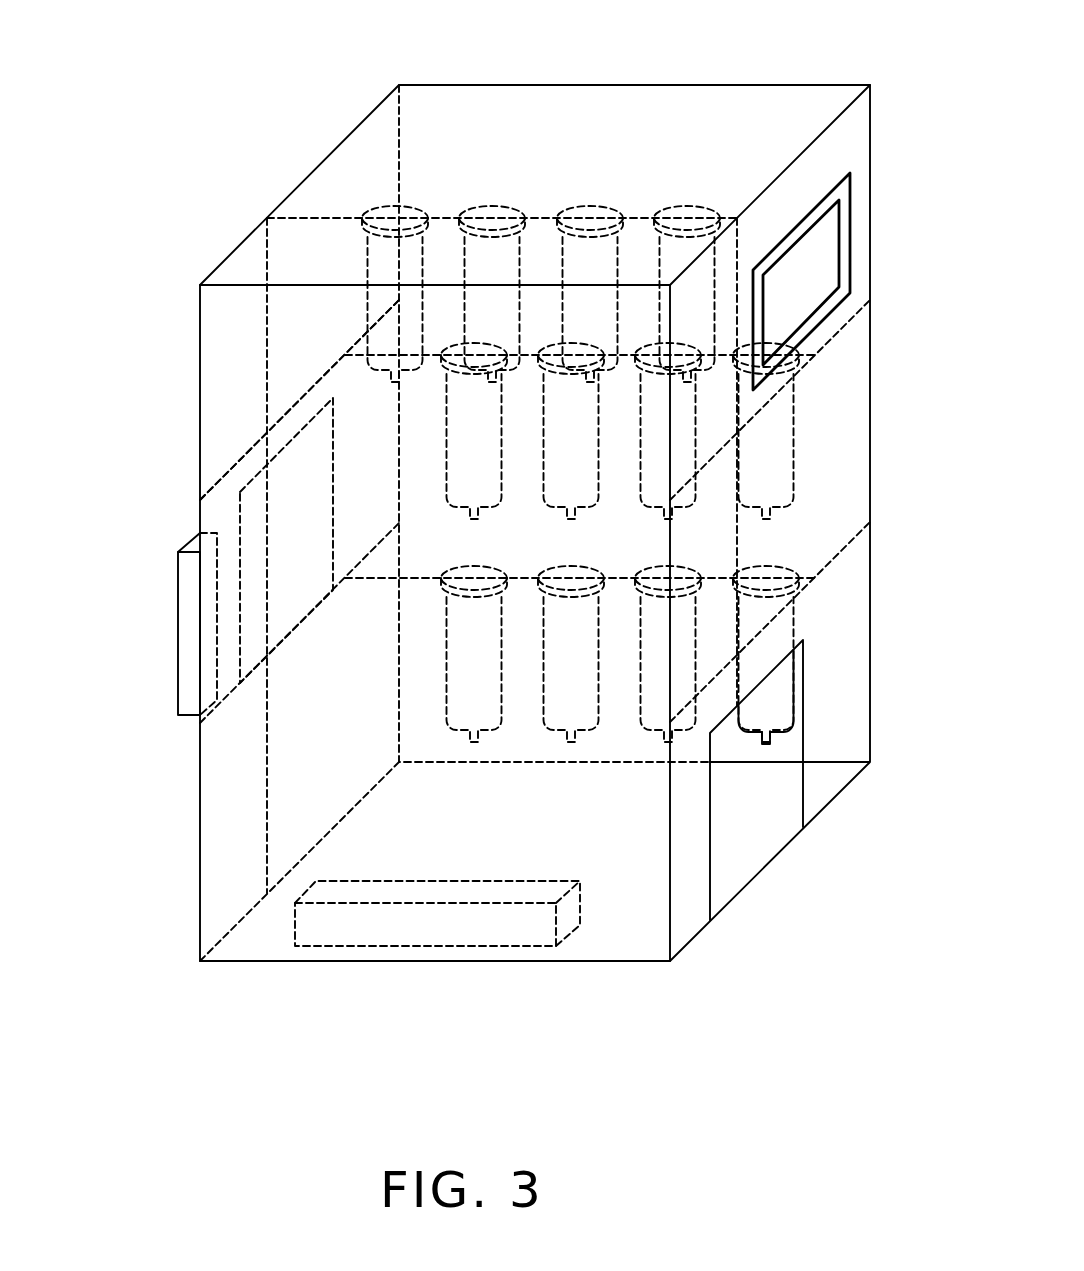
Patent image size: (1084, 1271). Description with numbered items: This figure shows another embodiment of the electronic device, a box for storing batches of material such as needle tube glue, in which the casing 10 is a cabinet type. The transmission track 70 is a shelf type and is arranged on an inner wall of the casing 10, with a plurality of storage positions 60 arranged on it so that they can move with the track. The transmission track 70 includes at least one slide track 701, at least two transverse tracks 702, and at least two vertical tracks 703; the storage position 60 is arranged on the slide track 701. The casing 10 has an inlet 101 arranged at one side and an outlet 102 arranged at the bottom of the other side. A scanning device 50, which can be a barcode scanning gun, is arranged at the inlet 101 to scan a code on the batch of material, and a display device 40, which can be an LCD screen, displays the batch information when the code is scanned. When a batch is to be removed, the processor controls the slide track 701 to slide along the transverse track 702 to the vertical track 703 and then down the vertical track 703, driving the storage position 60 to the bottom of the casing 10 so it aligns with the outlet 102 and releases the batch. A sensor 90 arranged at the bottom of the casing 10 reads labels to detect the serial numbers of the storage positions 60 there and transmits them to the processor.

The casing 10 is at (780, 85).
The display device 40 is at (823, 243).
The scanning device 50 is at (183, 577).
The storage positions 60 is at (382, 210).
The transmission track 70 is at (459, 544).
The slide track 701 is at (313, 216).
The transverse track 702 is at (222, 538).
The vertical track 703 is at (267, 345).
The sensor 90 is at (427, 924).
The inlet 101 is at (258, 513).
The outlet 102 is at (767, 755).